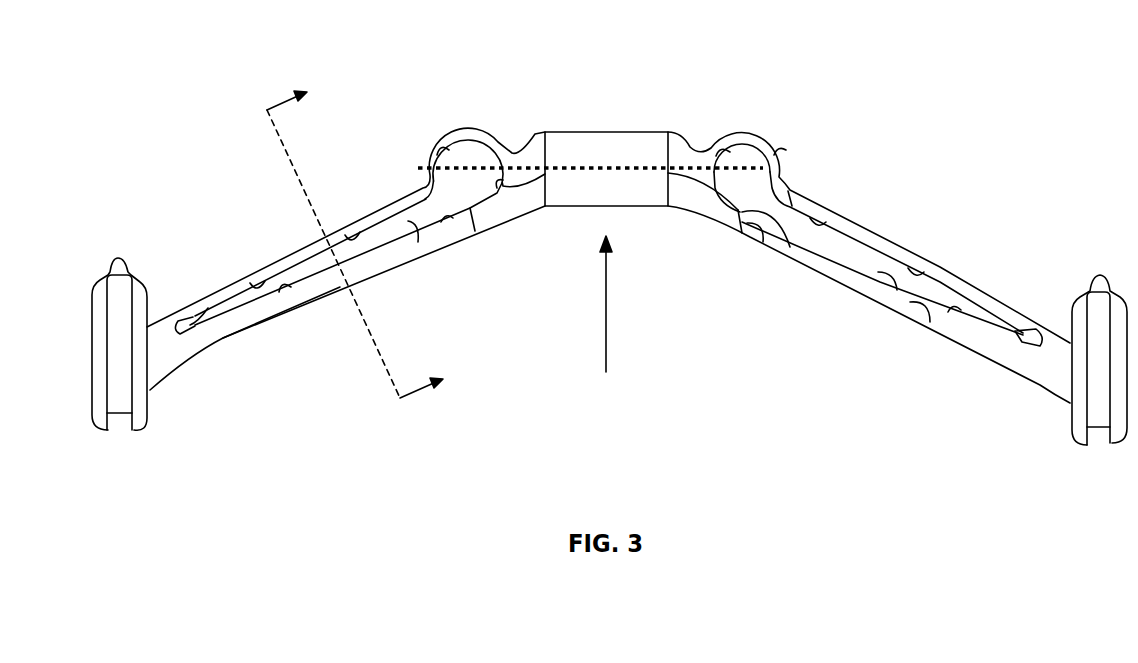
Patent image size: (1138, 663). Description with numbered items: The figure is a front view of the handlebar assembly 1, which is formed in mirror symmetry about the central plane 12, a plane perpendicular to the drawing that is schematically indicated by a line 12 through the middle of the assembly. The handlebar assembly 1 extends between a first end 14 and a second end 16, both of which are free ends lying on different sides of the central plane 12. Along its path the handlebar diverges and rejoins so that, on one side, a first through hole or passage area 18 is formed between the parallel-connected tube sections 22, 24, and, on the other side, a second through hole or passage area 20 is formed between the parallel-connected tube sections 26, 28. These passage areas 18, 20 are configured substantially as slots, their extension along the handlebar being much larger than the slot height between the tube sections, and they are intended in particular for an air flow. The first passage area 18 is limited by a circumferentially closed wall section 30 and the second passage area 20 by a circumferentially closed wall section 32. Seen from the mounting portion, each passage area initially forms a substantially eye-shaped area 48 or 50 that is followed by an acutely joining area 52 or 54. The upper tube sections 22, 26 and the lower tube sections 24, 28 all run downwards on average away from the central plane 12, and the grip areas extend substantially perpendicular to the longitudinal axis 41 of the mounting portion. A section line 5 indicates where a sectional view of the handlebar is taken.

The handlebar assembly 1 is at (206, 70).
The section line 5- 5 is at (365, 237).
The central plane 12 is at (599, 313).
The first end 14 is at (147, 393).
The second end 16 is at (1070, 403).
The first through hole or passage area 18 is at (418, 242).
The second through hole or passage area 20 is at (852, 257).
The tube or tube section 22 is at (412, 190).
The tube or tube section 24 is at (383, 258).
The tube or tube section 26 is at (782, 152).
The tube or tube section 28 is at (763, 243).
The wall section 30 is at (208, 308).
The wall section 32 is at (722, 152).
The longitudinal axis 41 is at (616, 168).
The eye-shaped area 48 is at (473, 162).
The eye-shaped area 50 is at (733, 172).
The joining area 52 is at (312, 260).
The joining area 54 is at (897, 290).